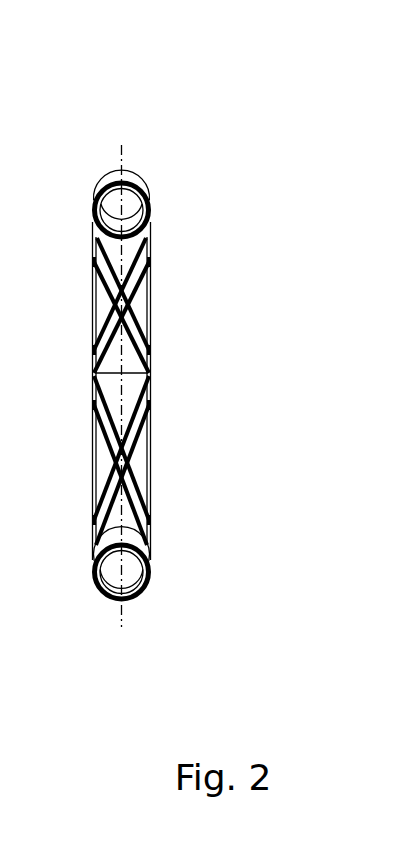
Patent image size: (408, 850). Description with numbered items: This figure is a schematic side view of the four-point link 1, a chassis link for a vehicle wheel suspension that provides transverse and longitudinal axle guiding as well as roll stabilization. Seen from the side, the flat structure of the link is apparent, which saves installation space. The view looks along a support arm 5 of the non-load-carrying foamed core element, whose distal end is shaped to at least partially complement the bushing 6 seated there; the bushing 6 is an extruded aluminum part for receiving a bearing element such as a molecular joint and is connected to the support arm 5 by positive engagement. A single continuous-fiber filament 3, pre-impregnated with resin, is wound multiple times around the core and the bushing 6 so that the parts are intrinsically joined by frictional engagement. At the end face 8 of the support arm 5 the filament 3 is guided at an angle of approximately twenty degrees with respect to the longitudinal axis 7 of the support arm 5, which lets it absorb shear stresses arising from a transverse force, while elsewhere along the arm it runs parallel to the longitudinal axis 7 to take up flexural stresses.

The four-point link 1 is at (171, 150).
The filament 3 is at (98, 423).
The support arm 5 is at (158, 302).
The bushing 6 is at (137, 183).
The longitudinal axis 7 is at (122, 152).
The end face 8 is at (134, 452).